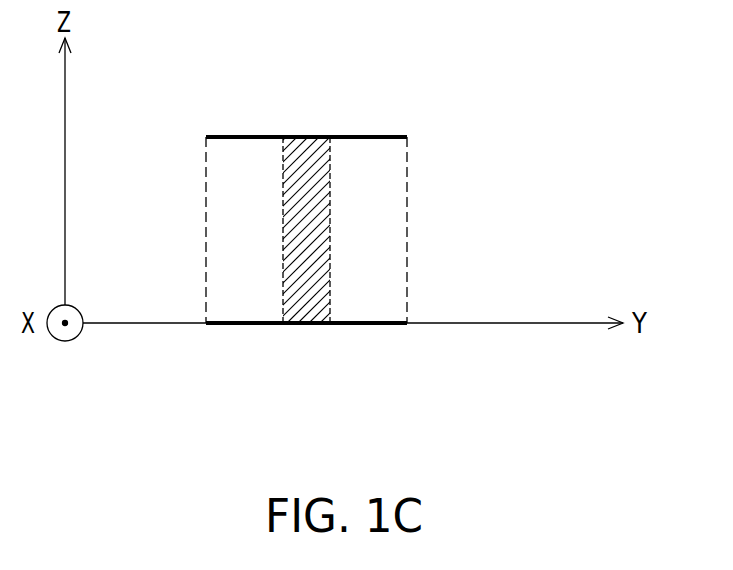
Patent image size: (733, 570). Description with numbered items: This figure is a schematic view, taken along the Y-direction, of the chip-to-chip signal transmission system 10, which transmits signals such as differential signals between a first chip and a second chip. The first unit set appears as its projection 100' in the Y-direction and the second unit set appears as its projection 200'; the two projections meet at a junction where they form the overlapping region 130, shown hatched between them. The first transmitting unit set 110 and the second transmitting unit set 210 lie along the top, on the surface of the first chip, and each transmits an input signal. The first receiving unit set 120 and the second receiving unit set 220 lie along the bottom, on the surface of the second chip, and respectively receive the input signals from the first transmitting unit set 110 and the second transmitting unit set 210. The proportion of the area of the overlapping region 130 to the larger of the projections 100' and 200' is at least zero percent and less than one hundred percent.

The chip-to-chip signal transmission system 10 is at (374, 253).
The projection of the first unit set 100' is at (209, 231).
The first transmitting unit set 110 is at (232, 137).
The first receiving unit set 120 is at (235, 323).
The overlapping region 130 is at (300, 323).
The projection of the second unit set 200' is at (404, 231).
The second transmitting unit set 210 is at (365, 137).
The second receiving unit set 220 is at (367, 323).